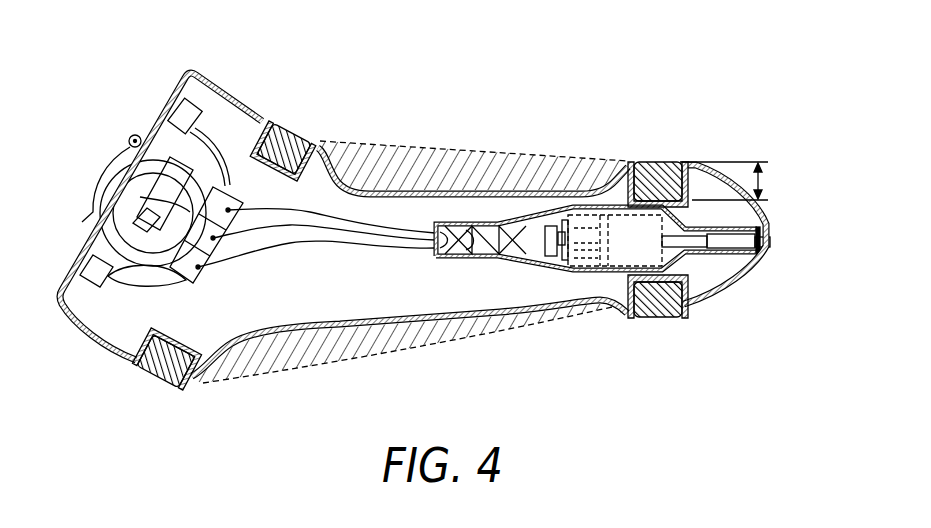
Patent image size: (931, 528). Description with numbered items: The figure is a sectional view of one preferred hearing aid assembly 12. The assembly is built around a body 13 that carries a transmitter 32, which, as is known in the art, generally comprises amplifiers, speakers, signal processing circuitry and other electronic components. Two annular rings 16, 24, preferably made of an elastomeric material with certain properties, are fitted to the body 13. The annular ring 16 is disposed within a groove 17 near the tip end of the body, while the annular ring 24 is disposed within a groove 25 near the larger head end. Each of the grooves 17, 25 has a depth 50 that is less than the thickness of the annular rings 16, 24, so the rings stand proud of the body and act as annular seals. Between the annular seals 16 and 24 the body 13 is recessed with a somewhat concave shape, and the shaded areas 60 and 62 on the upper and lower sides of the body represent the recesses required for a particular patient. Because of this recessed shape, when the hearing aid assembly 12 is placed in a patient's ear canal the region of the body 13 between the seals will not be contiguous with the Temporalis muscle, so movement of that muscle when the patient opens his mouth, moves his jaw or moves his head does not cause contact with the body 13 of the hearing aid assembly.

The body 13 is at (242, 103).
The groove 25 is at (255, 119).
The annular ring 24 is at (155, 377).
The hearing aid assembly 12 is at (377, 197).
The shaded area 60 is at (482, 163).
The shaded area 62 is at (393, 342).
The groove 17 is at (630, 162).
The annular ring 16 is at (658, 315).
The transmitter 32 is at (627, 247).
The depth 50 is at (760, 183).